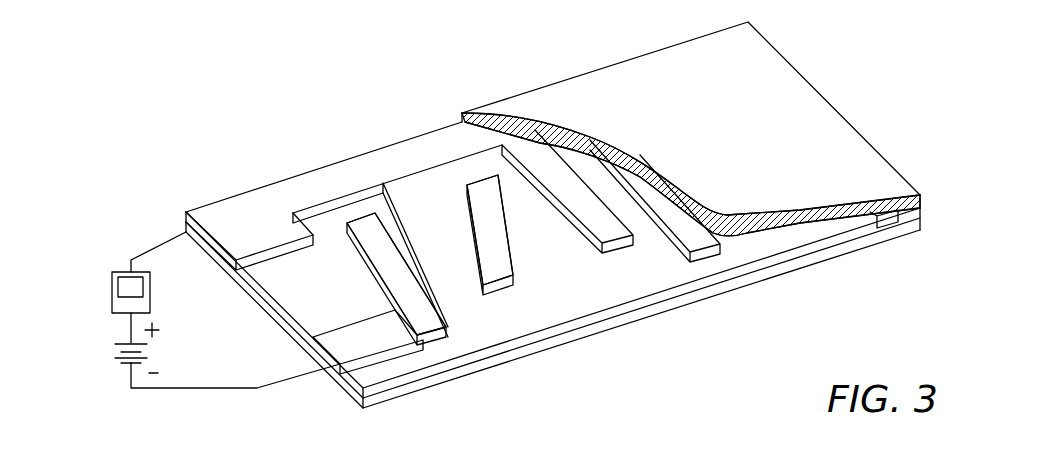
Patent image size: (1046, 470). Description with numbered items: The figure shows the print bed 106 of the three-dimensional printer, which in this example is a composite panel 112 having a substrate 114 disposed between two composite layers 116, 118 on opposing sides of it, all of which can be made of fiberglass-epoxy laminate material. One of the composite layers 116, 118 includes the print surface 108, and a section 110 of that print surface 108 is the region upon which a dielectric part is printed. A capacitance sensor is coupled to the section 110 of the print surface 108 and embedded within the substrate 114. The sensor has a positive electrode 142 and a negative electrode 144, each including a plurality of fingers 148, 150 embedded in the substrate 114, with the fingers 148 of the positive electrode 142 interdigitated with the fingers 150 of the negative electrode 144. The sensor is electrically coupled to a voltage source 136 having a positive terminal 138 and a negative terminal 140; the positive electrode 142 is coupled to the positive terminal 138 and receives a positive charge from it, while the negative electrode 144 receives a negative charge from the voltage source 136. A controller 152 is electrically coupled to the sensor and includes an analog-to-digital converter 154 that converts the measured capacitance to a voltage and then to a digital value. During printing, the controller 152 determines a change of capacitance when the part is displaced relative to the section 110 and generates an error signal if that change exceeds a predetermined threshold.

The print bed 106 is at (284, 70).
The print surface 108 is at (486, 219).
The section 110 is at (885, 292).
The composite panel 112 is at (186, 212).
The substrate 114 is at (560, 155).
The composite layer 116 is at (691, 121).
The composite layer 118 is at (556, 133).
The voltage source 136 is at (196, 325).
The positive terminal 138 is at (143, 346).
The negative terminal 140 is at (128, 365).
The positive electrode 142 is at (518, 168).
The negative electrode 144 is at (457, 308).
The fingers 148 is at (440, 169).
The fingers 150 is at (513, 290).
The controller 152 is at (103, 285).
The analog-to-digital converter 154 is at (125, 272).